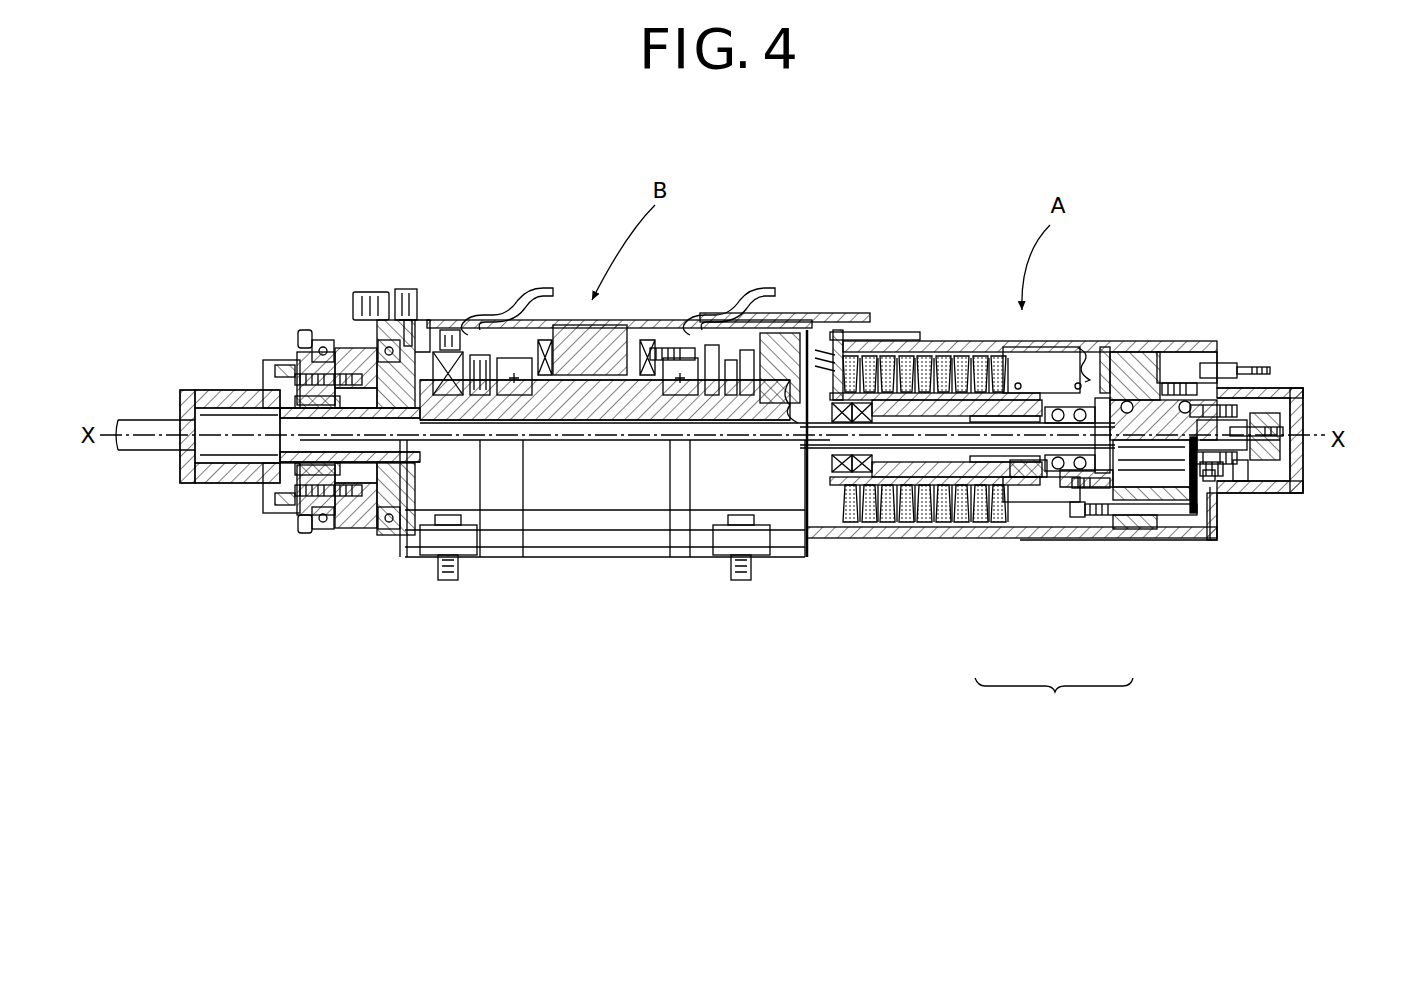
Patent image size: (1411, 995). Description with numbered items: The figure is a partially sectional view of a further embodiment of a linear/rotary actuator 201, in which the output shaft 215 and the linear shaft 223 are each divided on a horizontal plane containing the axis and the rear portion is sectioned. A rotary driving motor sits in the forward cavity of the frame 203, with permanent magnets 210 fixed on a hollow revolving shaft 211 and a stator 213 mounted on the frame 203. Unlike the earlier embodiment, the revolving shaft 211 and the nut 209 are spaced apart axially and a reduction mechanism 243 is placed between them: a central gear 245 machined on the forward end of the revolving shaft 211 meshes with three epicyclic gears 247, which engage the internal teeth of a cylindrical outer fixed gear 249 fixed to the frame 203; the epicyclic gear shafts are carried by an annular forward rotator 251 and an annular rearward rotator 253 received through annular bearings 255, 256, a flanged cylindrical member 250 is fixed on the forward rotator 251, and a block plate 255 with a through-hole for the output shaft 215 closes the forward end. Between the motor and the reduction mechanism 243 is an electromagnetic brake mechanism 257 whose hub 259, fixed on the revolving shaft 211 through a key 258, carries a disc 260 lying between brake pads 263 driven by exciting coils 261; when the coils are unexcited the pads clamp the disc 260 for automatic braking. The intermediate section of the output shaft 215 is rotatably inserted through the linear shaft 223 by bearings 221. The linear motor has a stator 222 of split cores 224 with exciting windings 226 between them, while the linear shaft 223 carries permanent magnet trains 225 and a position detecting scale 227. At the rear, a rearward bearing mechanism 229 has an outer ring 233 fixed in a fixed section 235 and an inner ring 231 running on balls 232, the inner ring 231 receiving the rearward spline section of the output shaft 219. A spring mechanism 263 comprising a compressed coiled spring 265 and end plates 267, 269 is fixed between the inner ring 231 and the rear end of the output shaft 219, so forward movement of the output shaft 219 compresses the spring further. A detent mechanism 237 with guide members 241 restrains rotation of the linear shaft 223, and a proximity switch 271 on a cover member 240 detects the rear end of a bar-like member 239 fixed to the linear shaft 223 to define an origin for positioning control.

The linear/rotary actuator 201 is at (865, 222).
The frame 203 is at (600, 340).
The nut 209 is at (237, 460).
The permanent magnets 210 is at (775, 340).
The revolving shaft 211 is at (540, 404).
The stator 213 is at (652, 316).
The output shaft 215 is at (153, 454).
The output shaft 219 is at (1228, 480).
The bearings 221 is at (820, 476).
The stator 222 is at (833, 334).
The linear shaft 223 is at (1038, 400).
The split cores 224 is at (860, 357).
The permanent magnet trains 225 is at (1032, 485).
The exciting windings 226 is at (850, 352).
The position detecting scale 227 is at (1052, 346).
The rearward bearing mechanism 229 is at (1090, 480).
The inner ring 231 is at (1180, 430).
The balls 232 is at (1068, 397).
The outer ring 233 is at (1212, 352).
The fixed section 235 is at (1170, 354).
The detent mechanism 237 is at (1140, 422).
The bar-like member 239 is at (1230, 394).
The cover member 240 is at (1270, 493).
The guide members 241 is at (1100, 528).
The reduction mechanism 243 is at (368, 568).
The central gear 245 is at (288, 510).
The epicyclic gears 247 is at (345, 348).
The outer fixed gear 249 is at (390, 330).
The flanged cylindrical member 250 is at (236, 390).
The forward rotator 251 is at (310, 372).
The rearward rotator 253 is at (442, 352).
The block plate 255 is at (190, 394).
The annular bearing 256 is at (392, 320).
The electromagnetic brake mechanism 257 is at (490, 330).
The key 258 is at (465, 410).
The hub 259 is at (546, 355).
The disc 260 is at (515, 364).
The exciting coils 261 is at (455, 340).
The spring mechanism 263 is at (1270, 411).
The coiled spring 265 is at (1245, 485).
The end plate 267 is at (1210, 490).
The end plate 269 is at (1298, 455).
The proximity switch 271 is at (1265, 372).